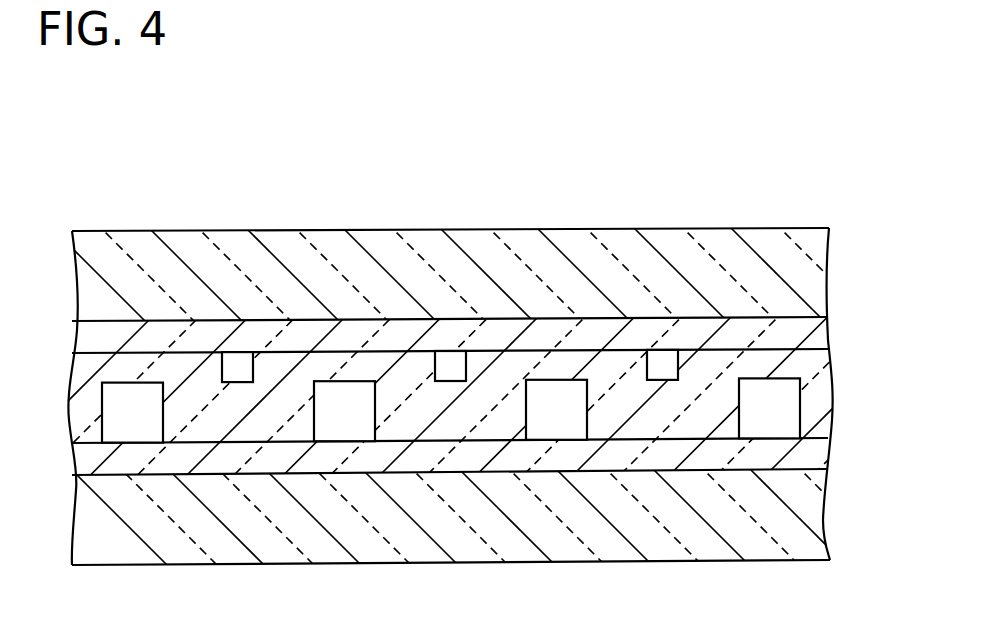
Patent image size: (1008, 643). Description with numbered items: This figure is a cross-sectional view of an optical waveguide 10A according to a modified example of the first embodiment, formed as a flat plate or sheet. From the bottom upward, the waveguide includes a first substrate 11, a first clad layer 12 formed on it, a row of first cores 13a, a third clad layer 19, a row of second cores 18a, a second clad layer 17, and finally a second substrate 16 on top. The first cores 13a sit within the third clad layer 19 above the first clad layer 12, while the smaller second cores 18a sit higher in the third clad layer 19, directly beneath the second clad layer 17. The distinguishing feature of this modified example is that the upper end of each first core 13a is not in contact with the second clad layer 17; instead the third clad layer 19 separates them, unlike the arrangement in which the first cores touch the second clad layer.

The semiconductor device 10A is at (85, 206).
The first substrate 11 is at (813, 522).
The first clad layer 12 is at (818, 450).
The first cores 13a is at (795, 400).
The second substrate 16 is at (813, 263).
The second clad layer 17 is at (817, 334).
The second cores 18a is at (662, 368).
The third clad layer 19 is at (818, 412).